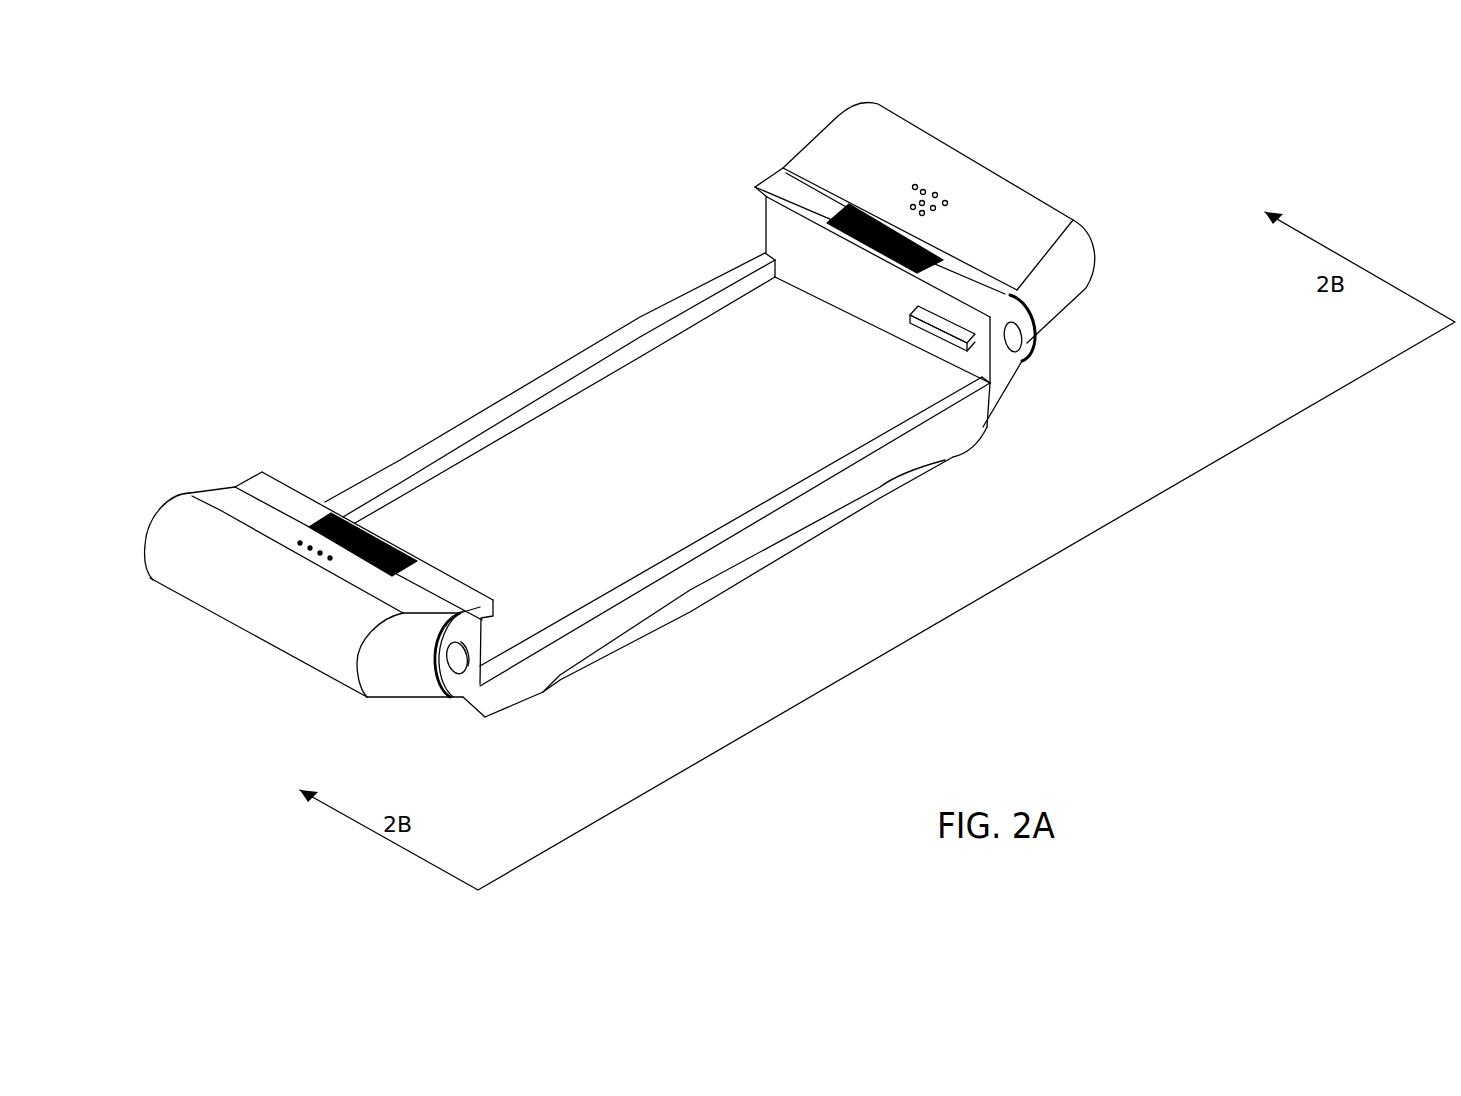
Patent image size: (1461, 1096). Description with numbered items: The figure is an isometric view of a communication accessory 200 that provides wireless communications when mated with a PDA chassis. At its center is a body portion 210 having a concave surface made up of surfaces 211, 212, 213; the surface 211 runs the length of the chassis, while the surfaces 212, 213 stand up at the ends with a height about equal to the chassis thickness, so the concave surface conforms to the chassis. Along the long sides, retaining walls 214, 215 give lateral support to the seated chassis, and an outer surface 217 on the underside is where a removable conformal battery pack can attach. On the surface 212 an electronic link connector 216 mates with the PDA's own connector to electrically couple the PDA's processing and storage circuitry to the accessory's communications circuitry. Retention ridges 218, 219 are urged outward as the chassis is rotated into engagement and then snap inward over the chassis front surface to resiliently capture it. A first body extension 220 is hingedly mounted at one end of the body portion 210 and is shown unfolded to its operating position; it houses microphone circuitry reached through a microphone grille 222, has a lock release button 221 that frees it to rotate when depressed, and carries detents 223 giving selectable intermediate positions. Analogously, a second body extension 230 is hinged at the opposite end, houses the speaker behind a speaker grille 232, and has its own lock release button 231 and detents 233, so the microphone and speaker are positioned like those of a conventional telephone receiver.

The communication accessory 200 is at (436, 309).
The body portion 210 is at (446, 430).
The surface 211 is at (668, 460).
The surface 212 is at (828, 270).
The surface 213 is at (490, 640).
The retaining wall 214 is at (593, 373).
The retaining wall 215 is at (767, 484).
The electronic link connector 216 is at (915, 314).
The outer surface 217 is at (657, 632).
The retention ridge 218 is at (492, 602).
The retention ridge 219 is at (752, 190).
The first body extension 220 is at (165, 505).
The lock release button 221 is at (455, 665).
The microphone grille 222 is at (325, 563).
The detents 223 is at (335, 505).
The second body extension 230 is at (863, 148).
The lock release button 231 is at (1020, 345).
The speaker grille 232 is at (935, 196).
The detents 233 is at (848, 206).